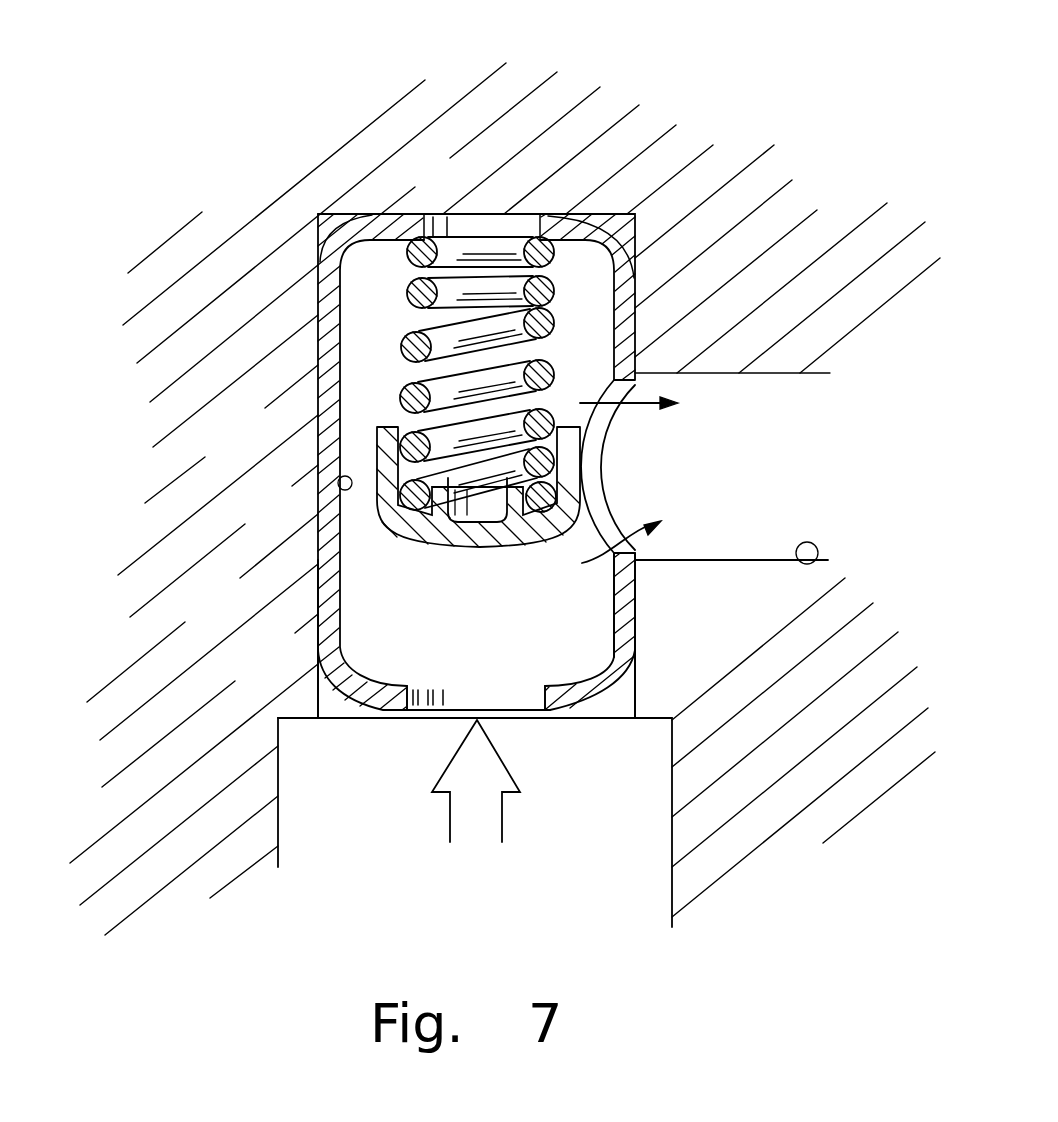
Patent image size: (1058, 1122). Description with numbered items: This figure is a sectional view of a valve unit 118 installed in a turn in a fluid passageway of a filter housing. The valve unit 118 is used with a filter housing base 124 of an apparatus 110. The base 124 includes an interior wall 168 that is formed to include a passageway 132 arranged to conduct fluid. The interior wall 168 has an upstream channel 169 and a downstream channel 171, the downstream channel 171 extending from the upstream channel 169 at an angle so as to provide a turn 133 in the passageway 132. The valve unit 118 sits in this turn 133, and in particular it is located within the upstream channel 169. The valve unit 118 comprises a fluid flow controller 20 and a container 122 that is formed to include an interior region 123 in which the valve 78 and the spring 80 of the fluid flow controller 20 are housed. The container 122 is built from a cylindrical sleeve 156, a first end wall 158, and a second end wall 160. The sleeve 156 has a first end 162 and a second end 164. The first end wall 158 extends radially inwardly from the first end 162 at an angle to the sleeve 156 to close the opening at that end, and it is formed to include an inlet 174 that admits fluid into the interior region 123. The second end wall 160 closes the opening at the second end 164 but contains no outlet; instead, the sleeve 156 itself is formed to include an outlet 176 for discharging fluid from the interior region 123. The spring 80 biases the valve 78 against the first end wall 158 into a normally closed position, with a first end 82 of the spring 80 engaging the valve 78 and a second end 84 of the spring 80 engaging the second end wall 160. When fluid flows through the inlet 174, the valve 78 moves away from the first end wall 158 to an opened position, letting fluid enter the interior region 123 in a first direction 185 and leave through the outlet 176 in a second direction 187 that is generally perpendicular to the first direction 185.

The apparatus 110 is at (250, 115).
The filter housing base 124 is at (186, 445).
The cylindrical sleeve 156 is at (315, 410).
The container 122 is at (314, 575).
The second end wall 160 is at (377, 216).
The second end 164 is at (639, 257).
The outlet 176 is at (592, 460).
The second direction 187 is at (634, 403).
The turn 133 is at (652, 561).
The downstream channel 171 is at (799, 565).
The upstream channel 169 is at (635, 610).
The interior wall 168 is at (623, 683).
The first end 162 is at (318, 630).
The first end wall 158 is at (388, 700).
The valve unit 118 is at (348, 706).
The inlet 174 is at (527, 713).
The first direction 185 is at (503, 818).
The passageway 132 is at (663, 853).
The interior region 123 is at (338, 484).
The fluid flow controller 20 is at (376, 412).
The spring 80 is at (408, 288).
The second end 84 is at (557, 248).
The valve 78 is at (433, 543).
The first end 82 is at (537, 545).